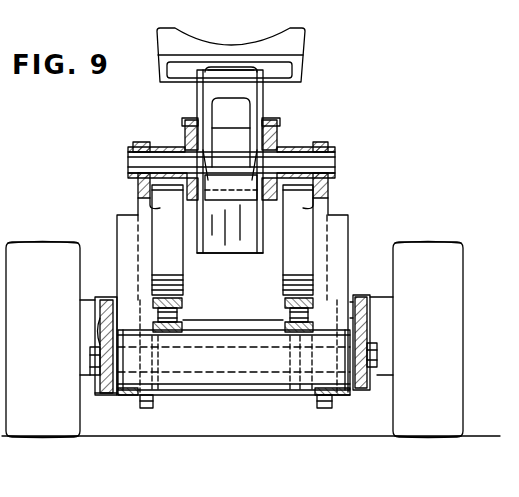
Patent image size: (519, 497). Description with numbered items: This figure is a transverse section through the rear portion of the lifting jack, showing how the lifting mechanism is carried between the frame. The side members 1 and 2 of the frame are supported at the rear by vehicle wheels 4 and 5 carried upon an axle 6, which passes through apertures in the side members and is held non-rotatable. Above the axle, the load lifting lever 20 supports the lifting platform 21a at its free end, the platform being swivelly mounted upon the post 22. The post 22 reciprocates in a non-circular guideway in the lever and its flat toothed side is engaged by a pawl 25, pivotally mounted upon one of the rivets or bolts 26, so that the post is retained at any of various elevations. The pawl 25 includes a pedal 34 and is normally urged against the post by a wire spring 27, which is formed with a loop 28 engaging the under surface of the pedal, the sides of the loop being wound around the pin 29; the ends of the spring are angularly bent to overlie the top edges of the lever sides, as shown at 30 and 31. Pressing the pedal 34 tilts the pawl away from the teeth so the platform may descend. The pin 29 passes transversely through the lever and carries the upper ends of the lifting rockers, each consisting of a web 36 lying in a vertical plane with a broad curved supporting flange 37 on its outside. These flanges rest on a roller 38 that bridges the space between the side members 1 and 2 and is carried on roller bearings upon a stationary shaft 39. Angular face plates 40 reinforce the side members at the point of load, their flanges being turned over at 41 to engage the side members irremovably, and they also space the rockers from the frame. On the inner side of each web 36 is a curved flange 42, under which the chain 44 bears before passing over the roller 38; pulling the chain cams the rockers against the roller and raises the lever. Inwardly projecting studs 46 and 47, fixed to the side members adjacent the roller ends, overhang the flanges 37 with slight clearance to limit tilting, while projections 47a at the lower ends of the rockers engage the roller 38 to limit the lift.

The side member 1 is at (105, 393).
The side member 2 is at (371, 305).
The vehicle wheel 4 is at (40, 244).
The vehicle wheel 5 is at (441, 243).
The axle 6 is at (237, 328).
The load lifting lever 20 is at (280, 135).
The lifting platform 21a is at (305, 57).
The post 22 is at (197, 95).
The pawl 25 is at (225, 190).
The rivet or bolt 26 is at (184, 140).
The wire spring 27 is at (258, 107).
The loop 28 is at (254, 160).
The pin 29 is at (336, 161).
The spring end 30 is at (182, 120).
The spring end 31 is at (281, 120).
The pedal 34 is at (233, 68).
The web 36 is at (138, 198).
The supporting flange 37 is at (119, 237).
The roller 38 is at (230, 386).
The stationary shaft 39 is at (378, 354).
The angular face plate 40 is at (108, 297).
The turned-over flange 41 is at (97, 297).
The curved flange 42 is at (180, 265).
The chain 44 is at (182, 297).
The stud 46 is at (98, 335).
The stud 47 is at (371, 315).
The projection 47a is at (145, 408).